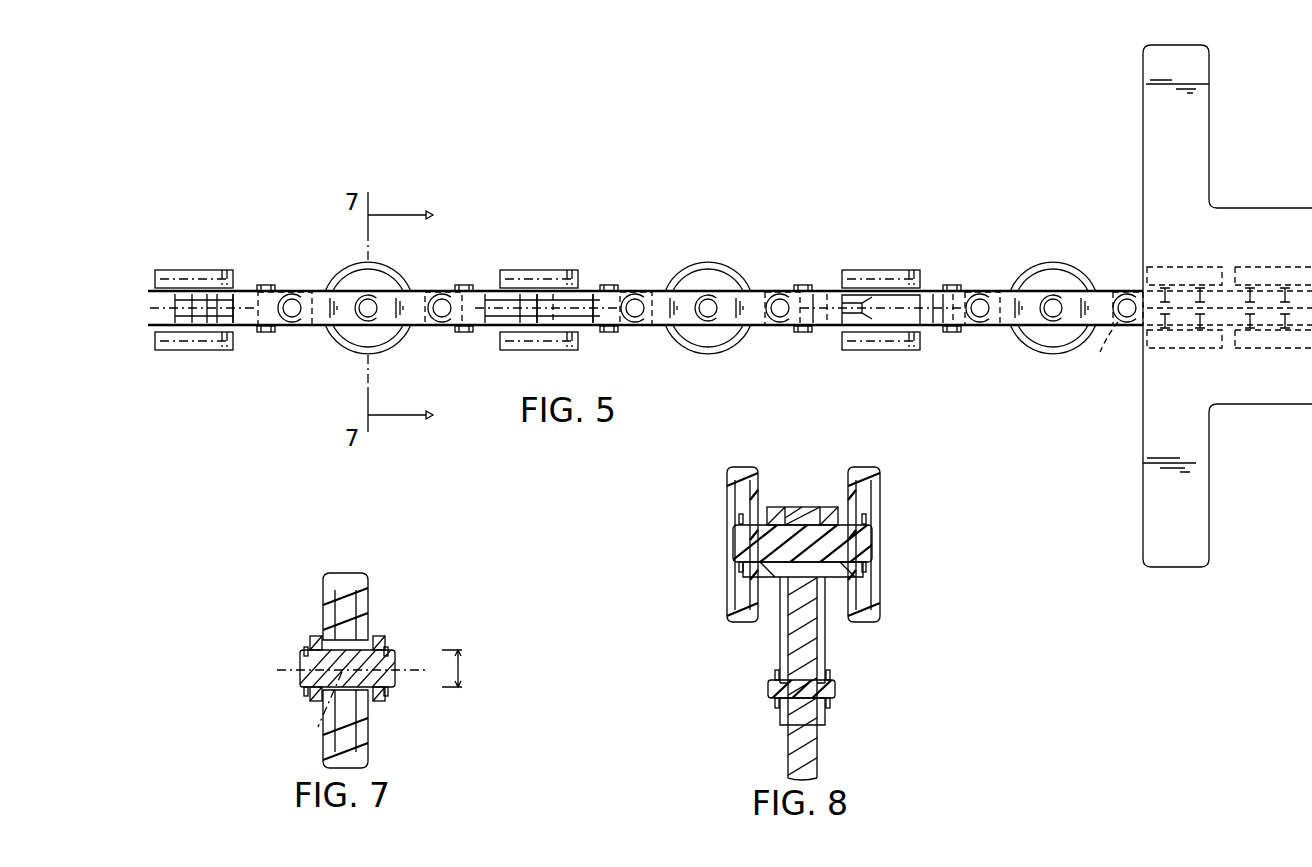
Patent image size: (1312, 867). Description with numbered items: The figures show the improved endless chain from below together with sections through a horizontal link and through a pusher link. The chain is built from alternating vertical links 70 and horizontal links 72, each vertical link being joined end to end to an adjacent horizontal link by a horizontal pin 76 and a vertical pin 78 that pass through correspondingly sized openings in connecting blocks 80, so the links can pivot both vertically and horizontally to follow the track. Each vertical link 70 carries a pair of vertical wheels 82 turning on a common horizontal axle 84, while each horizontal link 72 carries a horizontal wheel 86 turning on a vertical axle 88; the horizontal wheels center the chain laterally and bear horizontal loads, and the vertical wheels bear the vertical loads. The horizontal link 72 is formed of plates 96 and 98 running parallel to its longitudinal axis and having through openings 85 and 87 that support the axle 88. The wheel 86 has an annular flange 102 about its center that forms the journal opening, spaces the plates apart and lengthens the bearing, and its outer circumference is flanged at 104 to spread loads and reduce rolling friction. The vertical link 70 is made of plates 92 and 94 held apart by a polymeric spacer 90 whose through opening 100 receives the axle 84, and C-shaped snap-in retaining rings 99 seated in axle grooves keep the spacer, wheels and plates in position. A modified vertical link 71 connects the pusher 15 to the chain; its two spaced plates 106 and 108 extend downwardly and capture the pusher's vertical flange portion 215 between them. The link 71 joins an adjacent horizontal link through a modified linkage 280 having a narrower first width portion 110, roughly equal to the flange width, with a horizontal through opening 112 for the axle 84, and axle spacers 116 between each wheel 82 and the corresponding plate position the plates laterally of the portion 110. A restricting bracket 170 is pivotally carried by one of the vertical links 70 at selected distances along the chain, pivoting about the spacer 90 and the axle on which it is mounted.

In FIG. 5, the pusher 15 is at (1153, 397).
In FIG. 5, the vertical link 70 is at (243, 268).
In FIG. 8, the modified vertical link 71 is at (820, 460).
In FIG. 5, the horizontal link 72 is at (325, 271).
In FIG. 7, the horizontal link 72 is at (292, 598).
In FIG. 5, the horizontal pin 76 is at (268, 286).
In FIG. 5, the vertical pin 78 is at (296, 318).
In FIG. 5, the connecting block 80 is at (256, 318).
In FIG. 5, the vertical wheel 82 is at (182, 270).
In FIG. 8, the vertical wheel 82 is at (740, 467).
In FIG. 8, the horizontal axle 84 is at (872, 542).
In FIG. 7, the through opening 85 is at (302, 664).
In FIG. 5, the horizontal wheel 86 is at (362, 267).
In FIG. 7, the horizontal wheel 86 is at (350, 573).
In FIG. 7, the through opening 87 is at (396, 668).
In FIG. 5, the vertical axle 88 is at (370, 305).
In FIG. 7, the vertical axle 88 is at (300, 678).
In FIG. 5, the spacer 90 is at (210, 316).
In FIG. 5, the plate 92 is at (240, 323).
In FIG. 5, the plate 94 is at (240, 292).
In FIG. 7, the plate 96 is at (312, 638).
In FIG. 5, the plate 98 is at (410, 296).
In FIG. 7, the plate 98 is at (384, 641).
In FIG. 7, the retaining ring 99 is at (304, 694).
In FIG. 8, the retaining ring 99 is at (739, 518).
In FIG. 8, the through opening 100 is at (795, 496).
In FIG. 7, the annular flange 102 is at (366, 632).
In FIG. 7, the annular flange 104 is at (372, 585).
In FIG. 8, the plate 106 is at (825, 636).
In FIG. 8, the plate 108 is at (780, 636).
In FIG. 8, the first width portion 110 is at (800, 507).
In FIG. 8, the through opening 112 is at (733, 550).
In FIG. 8, the axle spacer 116 is at (775, 507).
In FIG. 5, the restricting bracket 170 is at (920, 322).
In FIG. 8, the vertical flange portion 215 is at (817, 745).
In FIG. 5, the modified linkage 280 is at (1100, 352).